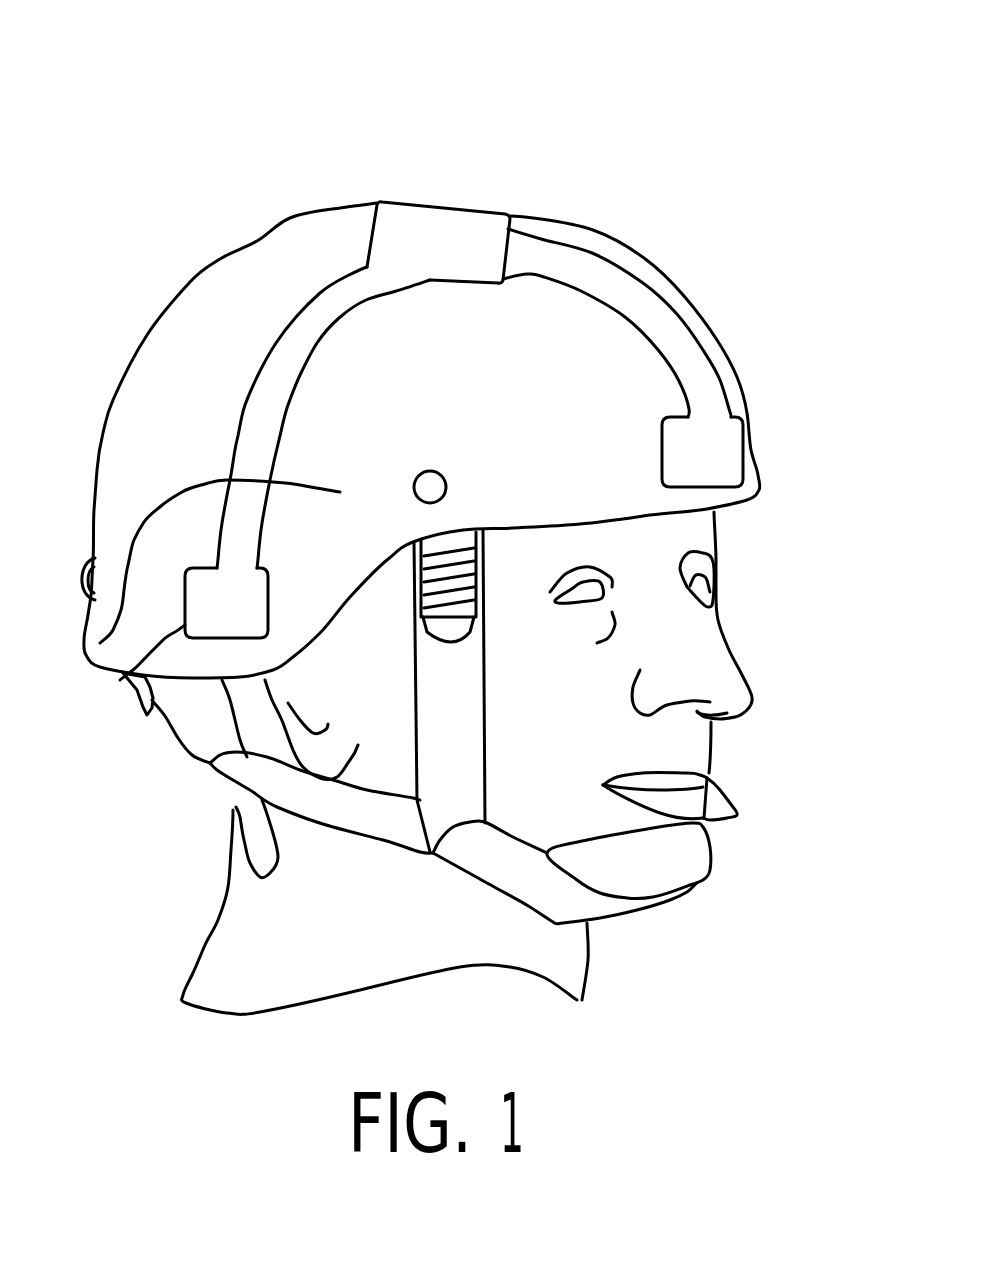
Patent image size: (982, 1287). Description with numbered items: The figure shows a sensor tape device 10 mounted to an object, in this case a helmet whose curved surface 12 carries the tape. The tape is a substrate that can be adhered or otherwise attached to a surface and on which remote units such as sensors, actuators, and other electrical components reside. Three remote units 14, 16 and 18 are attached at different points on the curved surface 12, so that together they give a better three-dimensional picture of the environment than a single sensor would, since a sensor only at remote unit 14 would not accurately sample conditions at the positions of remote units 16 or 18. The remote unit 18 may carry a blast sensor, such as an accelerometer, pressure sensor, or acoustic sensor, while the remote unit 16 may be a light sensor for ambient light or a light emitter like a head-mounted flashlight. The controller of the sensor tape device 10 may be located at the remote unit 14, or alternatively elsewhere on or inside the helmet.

The sensor tape device 10 is at (735, 135).
The curved surface 12 is at (283, 225).
The remote unit 14 is at (473, 225).
The remote unit 16 is at (733, 450).
The remote unit 18 is at (123, 683).